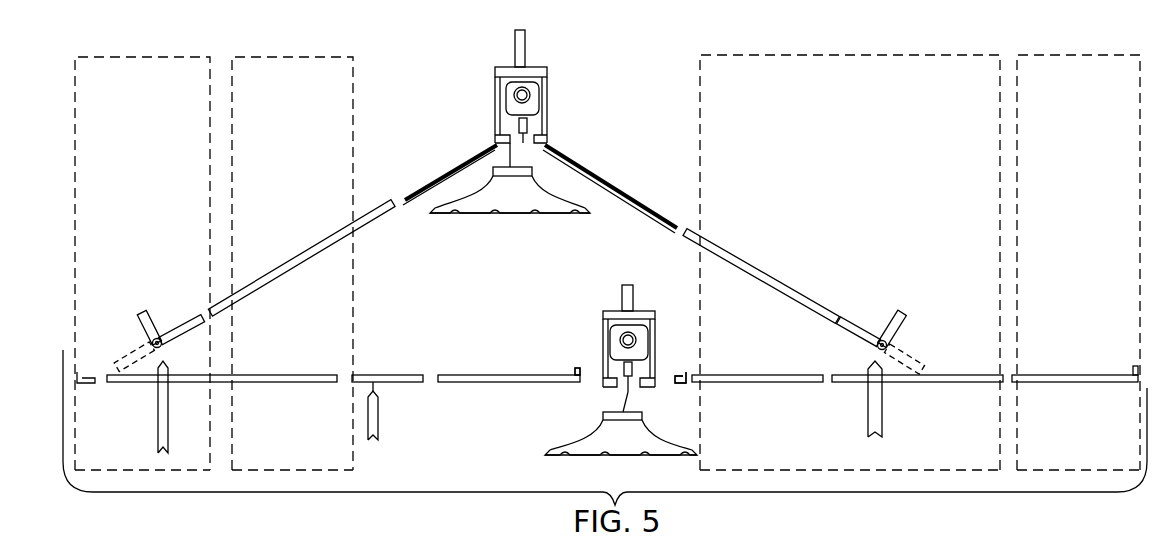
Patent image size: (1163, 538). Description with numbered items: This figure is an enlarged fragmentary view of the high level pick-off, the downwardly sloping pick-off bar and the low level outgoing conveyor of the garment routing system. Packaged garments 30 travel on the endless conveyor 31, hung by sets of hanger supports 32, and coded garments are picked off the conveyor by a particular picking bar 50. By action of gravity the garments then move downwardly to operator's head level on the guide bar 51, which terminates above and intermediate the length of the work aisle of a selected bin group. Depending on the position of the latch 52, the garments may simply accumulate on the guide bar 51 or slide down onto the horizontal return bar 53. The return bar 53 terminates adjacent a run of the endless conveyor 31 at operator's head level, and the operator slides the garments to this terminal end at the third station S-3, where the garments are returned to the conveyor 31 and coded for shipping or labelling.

The packaged garments 30 is at (510, 215).
The endless conveyor 31 is at (556, 88).
The hanger supports 32 is at (528, 133).
The picking bar 50 is at (462, 163).
The guide bar 51 is at (318, 260).
The latch 52 is at (145, 313).
The return bar 53 is at (302, 375).
The third station S-3 is at (572, 368).